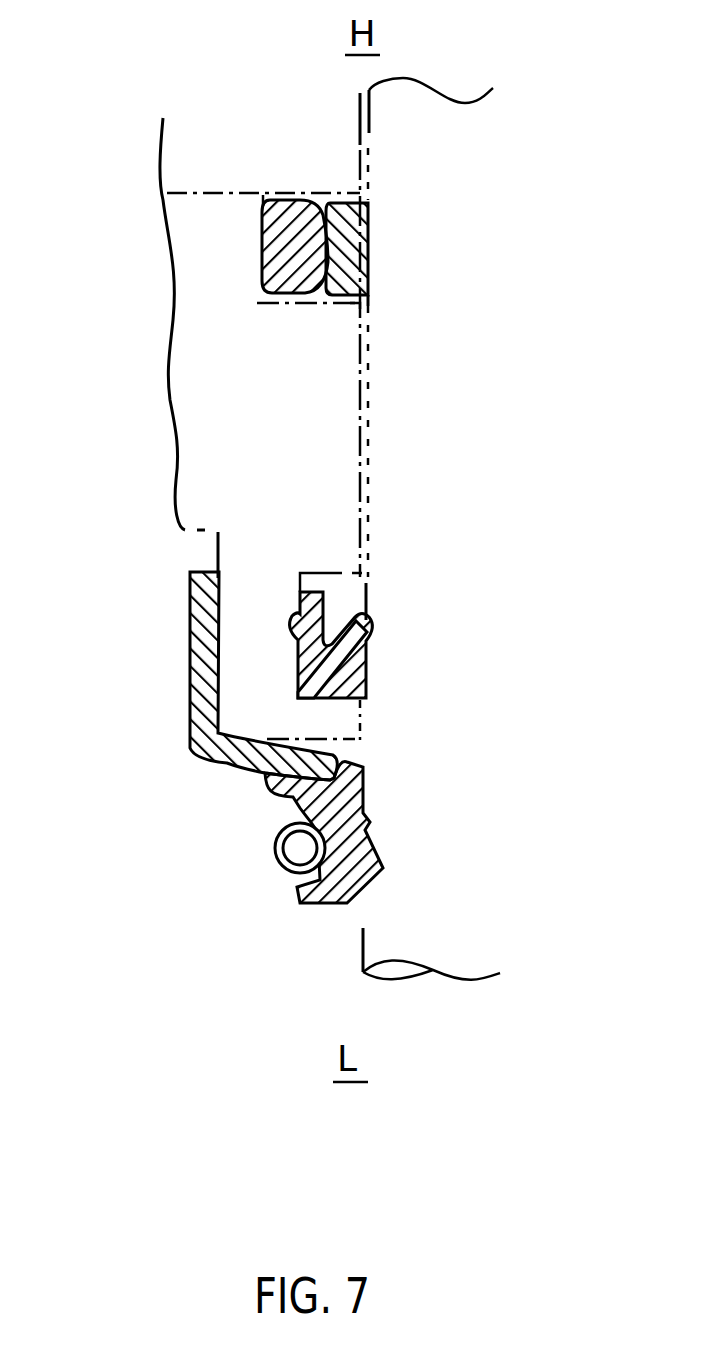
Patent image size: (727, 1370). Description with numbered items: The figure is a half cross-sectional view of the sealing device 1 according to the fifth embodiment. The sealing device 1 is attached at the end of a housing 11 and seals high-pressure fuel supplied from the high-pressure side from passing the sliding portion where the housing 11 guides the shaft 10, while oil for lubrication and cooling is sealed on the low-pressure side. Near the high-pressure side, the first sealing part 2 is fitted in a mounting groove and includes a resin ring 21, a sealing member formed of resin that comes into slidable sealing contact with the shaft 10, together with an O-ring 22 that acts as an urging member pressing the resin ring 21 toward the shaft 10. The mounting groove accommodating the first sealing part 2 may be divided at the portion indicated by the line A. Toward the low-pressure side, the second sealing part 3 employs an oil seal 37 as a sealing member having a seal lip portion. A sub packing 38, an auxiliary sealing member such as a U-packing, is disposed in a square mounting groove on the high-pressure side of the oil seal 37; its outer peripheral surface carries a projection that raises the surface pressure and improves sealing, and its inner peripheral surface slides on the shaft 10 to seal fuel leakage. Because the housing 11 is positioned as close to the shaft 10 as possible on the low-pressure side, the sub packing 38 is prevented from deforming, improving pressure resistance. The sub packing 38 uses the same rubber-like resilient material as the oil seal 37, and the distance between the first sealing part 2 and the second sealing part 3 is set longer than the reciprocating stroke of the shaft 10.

The sealing device 1 is at (255, 434).
The first sealing part 2 is at (260, 278).
The second sealing part 3 is at (172, 689).
The shaft 10 is at (398, 498).
The housing 11 is at (238, 123).
The resin ring 21 is at (367, 253).
The O-ring 22 is at (293, 247).
The oil seal 37 is at (290, 797).
The sub packing 38 is at (363, 660).
The line A is at (213, 192).